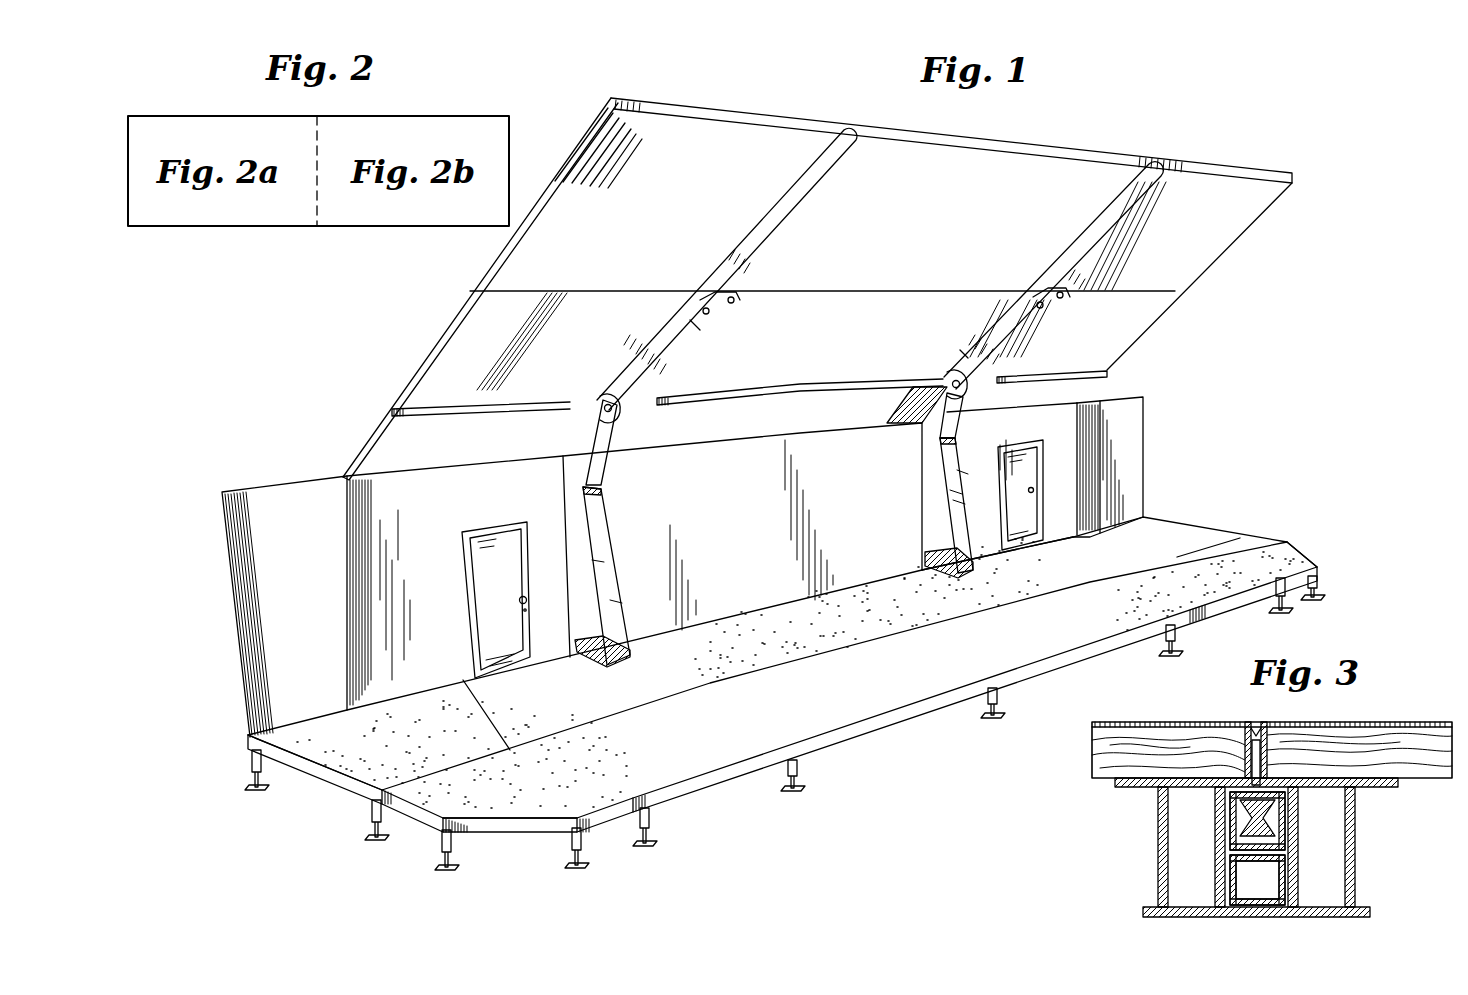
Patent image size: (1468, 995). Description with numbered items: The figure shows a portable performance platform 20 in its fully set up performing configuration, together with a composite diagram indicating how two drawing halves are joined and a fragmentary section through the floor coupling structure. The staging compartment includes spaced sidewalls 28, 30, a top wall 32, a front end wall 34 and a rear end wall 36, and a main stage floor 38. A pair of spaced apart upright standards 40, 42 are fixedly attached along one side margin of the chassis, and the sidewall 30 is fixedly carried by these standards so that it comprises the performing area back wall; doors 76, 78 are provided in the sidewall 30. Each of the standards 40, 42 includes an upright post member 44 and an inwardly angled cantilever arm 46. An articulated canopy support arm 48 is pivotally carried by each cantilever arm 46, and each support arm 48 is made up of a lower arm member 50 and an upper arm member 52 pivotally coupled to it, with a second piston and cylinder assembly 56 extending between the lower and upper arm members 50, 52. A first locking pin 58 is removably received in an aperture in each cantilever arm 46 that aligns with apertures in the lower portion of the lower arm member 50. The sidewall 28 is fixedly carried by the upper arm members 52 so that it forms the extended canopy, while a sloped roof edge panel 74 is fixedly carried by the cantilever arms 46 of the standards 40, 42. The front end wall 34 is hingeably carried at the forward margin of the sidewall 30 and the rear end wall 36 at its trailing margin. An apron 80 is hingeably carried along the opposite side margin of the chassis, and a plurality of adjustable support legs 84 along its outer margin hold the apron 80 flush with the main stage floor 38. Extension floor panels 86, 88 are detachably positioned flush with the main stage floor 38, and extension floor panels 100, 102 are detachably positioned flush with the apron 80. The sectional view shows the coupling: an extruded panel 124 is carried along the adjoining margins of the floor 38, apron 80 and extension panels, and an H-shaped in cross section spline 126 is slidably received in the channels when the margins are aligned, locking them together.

In FIG. 1, the portable performance platform 20 is at (1272, 370).
In FIG. 1, the sidewall 28 is at (1190, 260).
In FIG. 1, the sidewall 30 is at (447, 532).
In FIG. 1, the top wall 32 is at (487, 328).
In FIG. 1, the front end wall 34 is at (295, 600).
In FIG. 1, the rear end wall 36 is at (1120, 443).
In FIG. 1, the main stage floor 38 is at (463, 707).
In FIG. 3, the main stage floor 38 is at (1372, 722).
In FIG. 1, the upright standard 40 is at (547, 520).
In FIG. 1, the upright standard 42 is at (960, 474).
In FIG. 1, the upright post member 44 is at (613, 567).
In FIG. 1, the cantilever arm 46 is at (577, 437).
In FIG. 1, the articulated canopy support arm 48 is at (687, 296).
In FIG. 1, the lower arm member 50 is at (625, 350).
In FIG. 1, the upper arm member 52 is at (790, 200).
In FIG. 1, the second piston and cylinder assembly 56 is at (667, 313).
In FIG. 1, the first locking pin 58 is at (600, 412).
In FIG. 1, the sloped roof edge panel 74 is at (400, 432).
In FIG. 1, the door 76 is at (507, 580).
In FIG. 1, the door 78 is at (1027, 475).
In FIG. 1, the apron 80 is at (770, 710).
In FIG. 1, the adjustable support legs 84 is at (441, 835).
In FIG. 1, the extension floor panel 86 is at (322, 750).
In FIG. 3, the extension floor panel 86 is at (1153, 722).
In FIG. 1, the extension floor panel 88 is at (1167, 533).
In FIG. 1, the extension floor panel 100 is at (543, 803).
In FIG. 1, the extension floor panel 102 is at (1287, 550).
In FIG. 3, the extruded panel 124 is at (1158, 880).
In FIG. 3, the spline 126 is at (1232, 835).